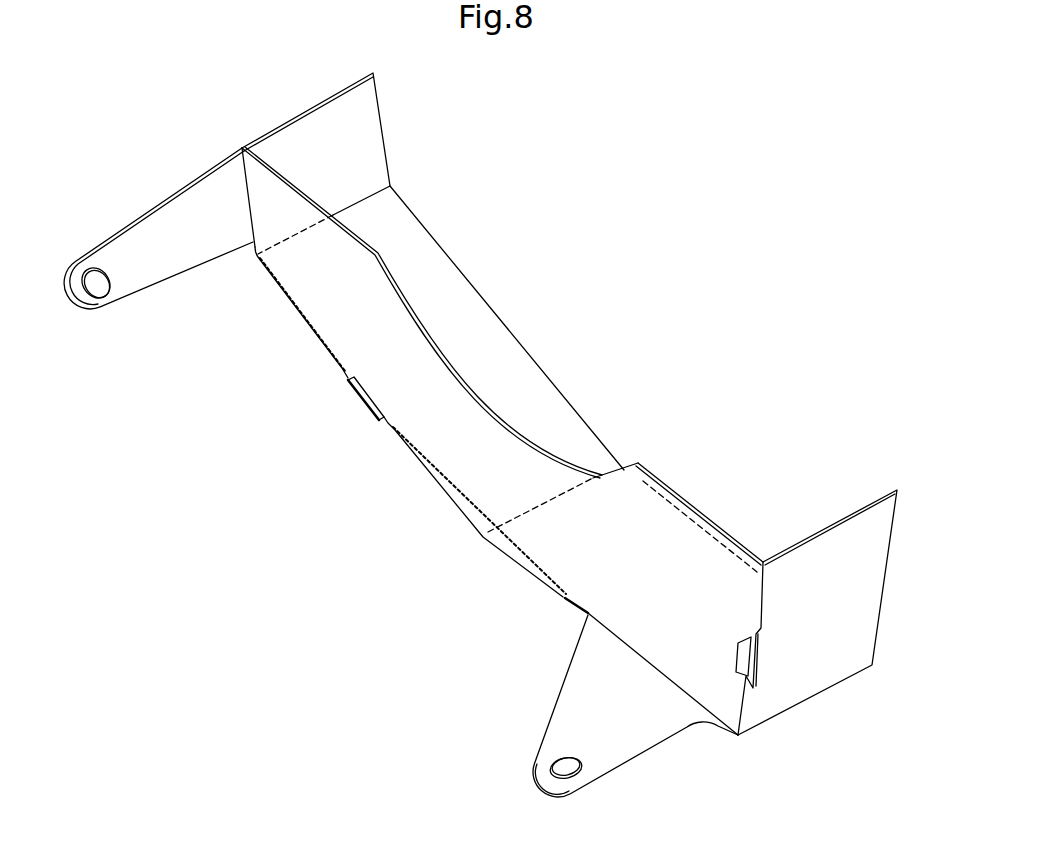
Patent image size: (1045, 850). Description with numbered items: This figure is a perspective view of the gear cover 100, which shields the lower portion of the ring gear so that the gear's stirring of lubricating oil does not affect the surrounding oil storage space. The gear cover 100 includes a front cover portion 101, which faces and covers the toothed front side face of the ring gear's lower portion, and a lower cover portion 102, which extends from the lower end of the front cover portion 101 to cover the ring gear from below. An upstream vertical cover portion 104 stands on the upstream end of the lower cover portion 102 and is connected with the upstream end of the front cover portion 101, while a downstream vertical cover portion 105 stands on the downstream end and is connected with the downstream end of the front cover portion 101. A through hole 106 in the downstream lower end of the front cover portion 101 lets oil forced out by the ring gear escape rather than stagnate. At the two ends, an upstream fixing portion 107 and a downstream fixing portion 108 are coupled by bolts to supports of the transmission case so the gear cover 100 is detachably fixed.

The gear cover 100 is at (678, 152).
The front cover portion 101 is at (457, 457).
The lower cover portion 102 is at (535, 400).
The upstream vertical cover portion 104 is at (337, 140).
The downstream vertical cover portion 105 is at (800, 652).
The through hole 106 is at (613, 637).
The upstream fixing portion 107 is at (150, 262).
The downstream fixing portion 108 is at (618, 723).